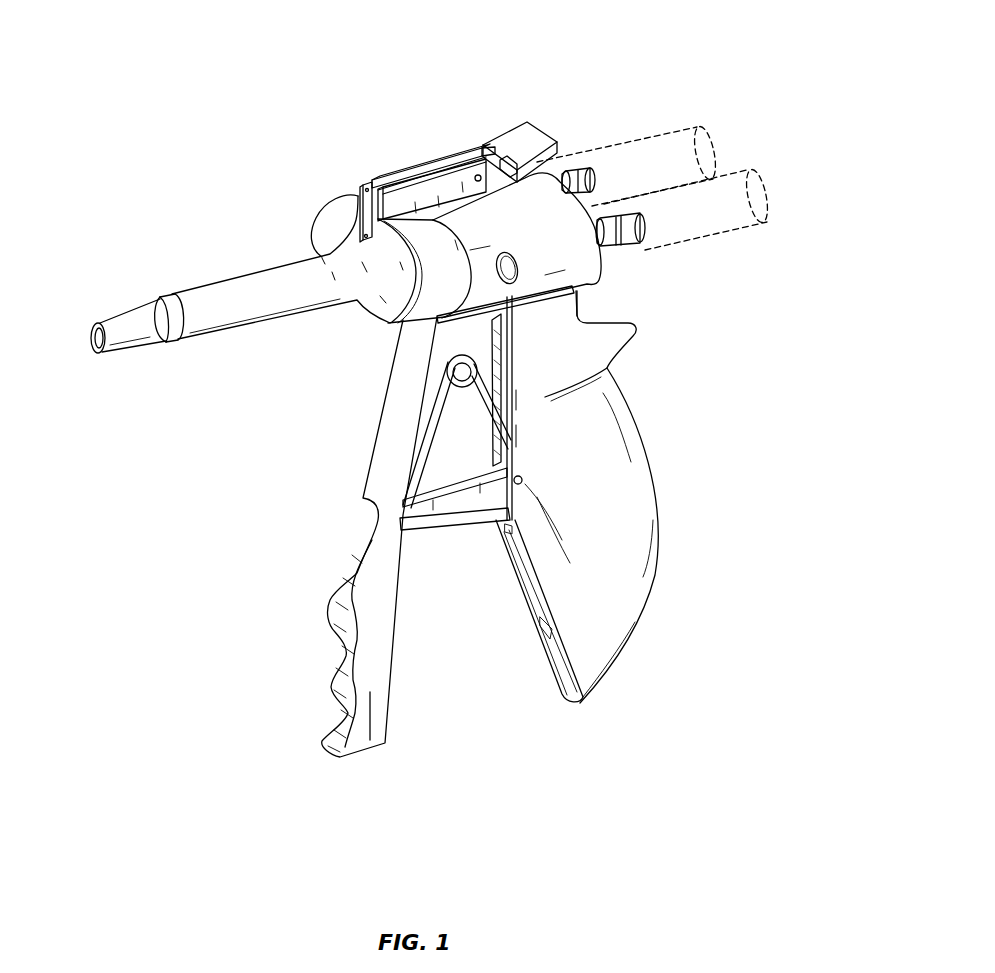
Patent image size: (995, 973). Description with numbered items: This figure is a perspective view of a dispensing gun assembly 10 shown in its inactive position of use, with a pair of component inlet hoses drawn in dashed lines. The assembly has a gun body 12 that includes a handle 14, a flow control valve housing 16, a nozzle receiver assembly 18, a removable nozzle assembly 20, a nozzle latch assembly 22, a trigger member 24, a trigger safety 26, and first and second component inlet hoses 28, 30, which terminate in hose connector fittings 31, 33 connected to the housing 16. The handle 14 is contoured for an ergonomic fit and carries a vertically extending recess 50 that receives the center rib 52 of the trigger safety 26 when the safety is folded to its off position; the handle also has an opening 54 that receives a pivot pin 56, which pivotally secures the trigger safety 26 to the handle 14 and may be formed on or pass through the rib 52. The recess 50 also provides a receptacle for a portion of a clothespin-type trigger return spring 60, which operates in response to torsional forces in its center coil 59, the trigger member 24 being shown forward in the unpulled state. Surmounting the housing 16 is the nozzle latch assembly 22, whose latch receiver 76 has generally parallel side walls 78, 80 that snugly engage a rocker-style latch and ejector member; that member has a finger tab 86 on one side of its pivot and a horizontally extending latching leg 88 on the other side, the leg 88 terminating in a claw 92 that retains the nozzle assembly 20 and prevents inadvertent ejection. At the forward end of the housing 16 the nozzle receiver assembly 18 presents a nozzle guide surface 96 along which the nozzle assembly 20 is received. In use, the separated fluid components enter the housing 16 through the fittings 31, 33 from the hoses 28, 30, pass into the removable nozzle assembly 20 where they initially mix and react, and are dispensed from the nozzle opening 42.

The dispensing gun assembly 10 is at (216, 36).
The gun body 12 is at (645, 428).
The handle 14 is at (638, 606).
The flow control valve housing 16 is at (570, 260).
The nozzle receiver assembly 18 is at (352, 192).
The removable nozzle assembly 20 is at (216, 282).
The nozzle latch assembly 22 is at (506, 128).
The trigger member 24 is at (345, 568).
The trigger safety 26 is at (430, 531).
The first component inlet hose 28 is at (738, 232).
The second component inlet hose 30 is at (687, 123).
The hose connector fitting 31 is at (640, 238).
The hose connector fitting 33 is at (577, 168).
The nozzle opening 42 is at (95, 336).
The vertically extending recess 50 is at (530, 587).
The center rib 52 is at (471, 479).
The opening 54 is at (524, 485).
The pivot pin 56 is at (523, 478).
The center coil 59 is at (448, 367).
The trigger return spring 60 is at (459, 393).
The latch receiver 76 is at (425, 173).
The side wall 78 is at (458, 196).
The side wall 80 is at (453, 166).
The finger tab 86 is at (536, 130).
The horizontally extending leg 88 is at (478, 158).
The claw 92 is at (357, 218).
The nozzle guide surface 96 is at (437, 316).